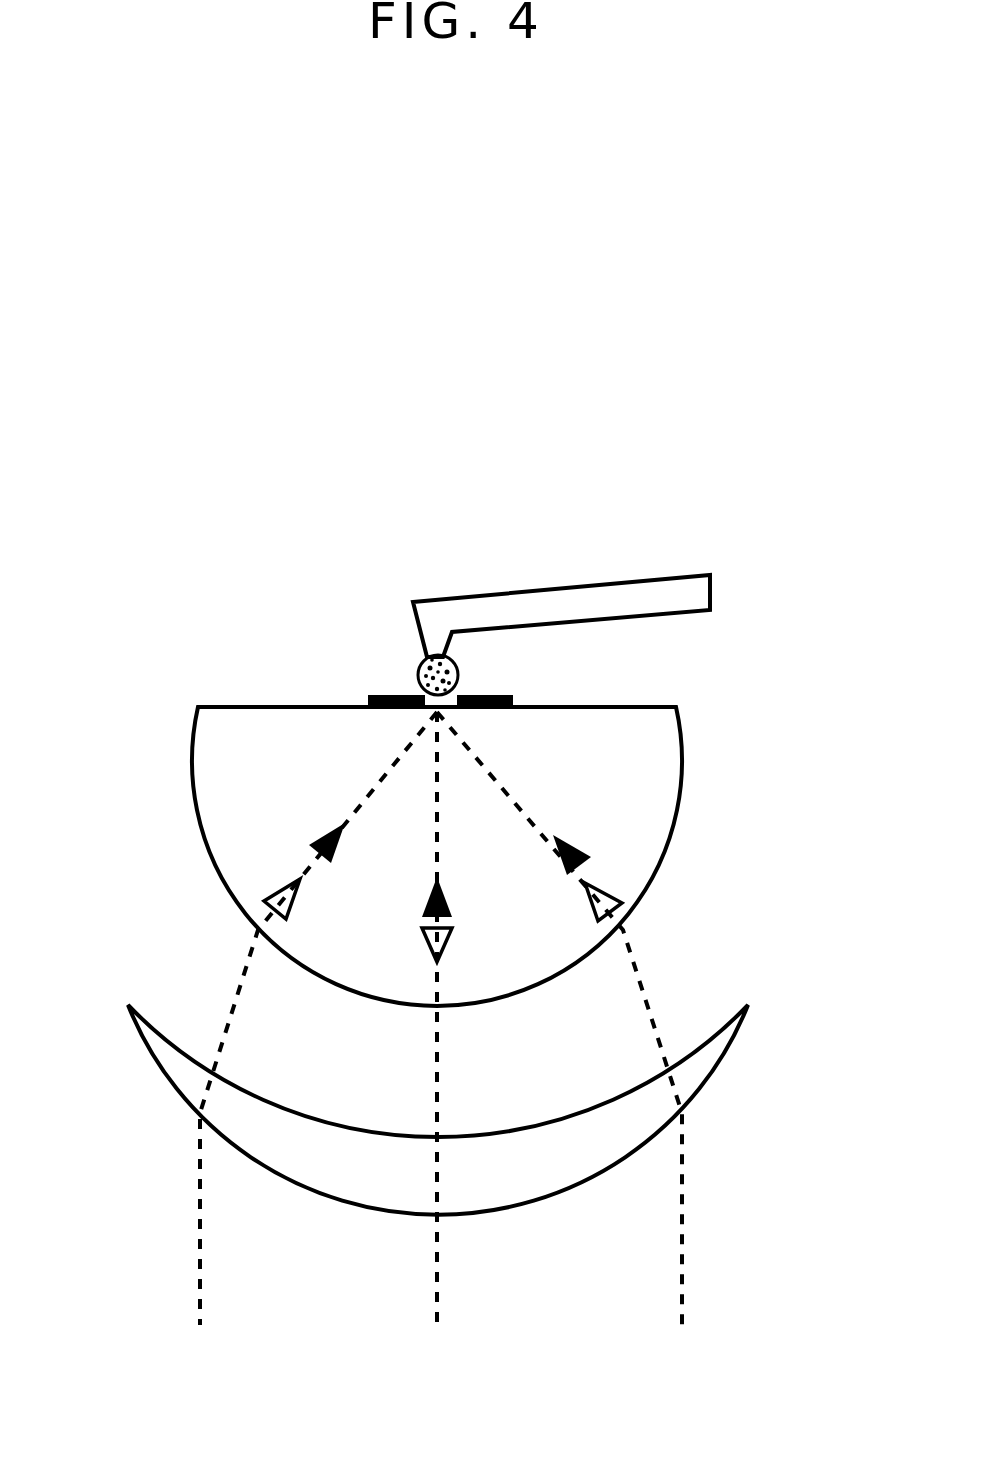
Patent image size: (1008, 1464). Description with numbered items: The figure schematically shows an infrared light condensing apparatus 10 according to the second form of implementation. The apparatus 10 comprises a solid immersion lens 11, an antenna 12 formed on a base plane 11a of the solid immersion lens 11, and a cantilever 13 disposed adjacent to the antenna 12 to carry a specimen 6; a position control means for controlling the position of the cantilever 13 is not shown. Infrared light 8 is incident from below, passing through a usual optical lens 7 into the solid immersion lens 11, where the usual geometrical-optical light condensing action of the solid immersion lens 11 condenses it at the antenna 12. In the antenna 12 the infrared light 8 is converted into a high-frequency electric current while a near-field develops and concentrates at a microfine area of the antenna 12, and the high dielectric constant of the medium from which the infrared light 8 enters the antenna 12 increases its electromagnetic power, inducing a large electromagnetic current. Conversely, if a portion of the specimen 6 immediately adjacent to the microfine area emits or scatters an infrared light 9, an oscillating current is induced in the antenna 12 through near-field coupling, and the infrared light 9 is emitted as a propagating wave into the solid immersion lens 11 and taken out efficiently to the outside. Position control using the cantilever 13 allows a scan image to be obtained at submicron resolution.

The specimen 6 is at (422, 667).
The usual optical lens 7 is at (717, 1067).
The infrared light 8 is at (323, 840).
The infrared light 9 is at (290, 890).
The infrared light condensing apparatus 10 is at (449, 360).
The solid immersion lens 11 is at (655, 792).
The base plane 11a is at (272, 706).
The antenna 12 is at (367, 697).
The cantilever 13 is at (568, 607).